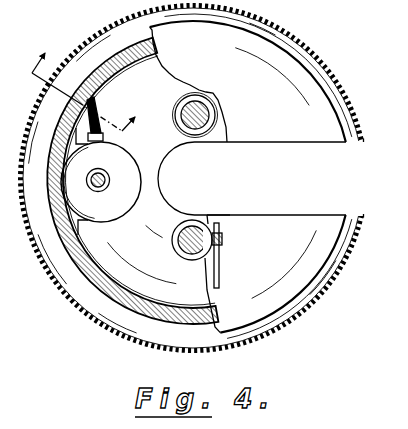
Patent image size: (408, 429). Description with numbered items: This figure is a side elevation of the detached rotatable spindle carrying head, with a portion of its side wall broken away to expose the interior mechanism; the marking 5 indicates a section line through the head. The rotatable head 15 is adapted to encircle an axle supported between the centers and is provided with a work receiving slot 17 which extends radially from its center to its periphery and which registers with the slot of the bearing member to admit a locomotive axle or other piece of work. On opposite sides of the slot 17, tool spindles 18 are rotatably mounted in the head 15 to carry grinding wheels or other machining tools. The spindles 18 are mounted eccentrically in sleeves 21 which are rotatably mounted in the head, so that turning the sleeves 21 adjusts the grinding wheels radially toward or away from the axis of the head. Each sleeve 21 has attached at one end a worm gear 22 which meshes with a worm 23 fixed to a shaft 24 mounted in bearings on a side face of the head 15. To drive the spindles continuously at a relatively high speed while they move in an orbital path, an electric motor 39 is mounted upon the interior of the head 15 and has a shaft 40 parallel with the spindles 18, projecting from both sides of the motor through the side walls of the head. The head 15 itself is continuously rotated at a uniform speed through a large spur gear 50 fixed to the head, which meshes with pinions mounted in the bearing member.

The section line 5- 5 is at (89, 77).
The rotatable head 15 is at (316, 88).
The work receiving slot 17 is at (348, 162).
The tool spindles 18 is at (210, 115).
The sleeves 21 is at (200, 106).
The worm gear 22 is at (227, 213).
The worm 23 is at (222, 239).
The shaft 24 is at (219, 265).
The electric motor 39 is at (121, 162).
The motor shaft 40 is at (97, 188).
The spur gear 50 is at (304, 50).